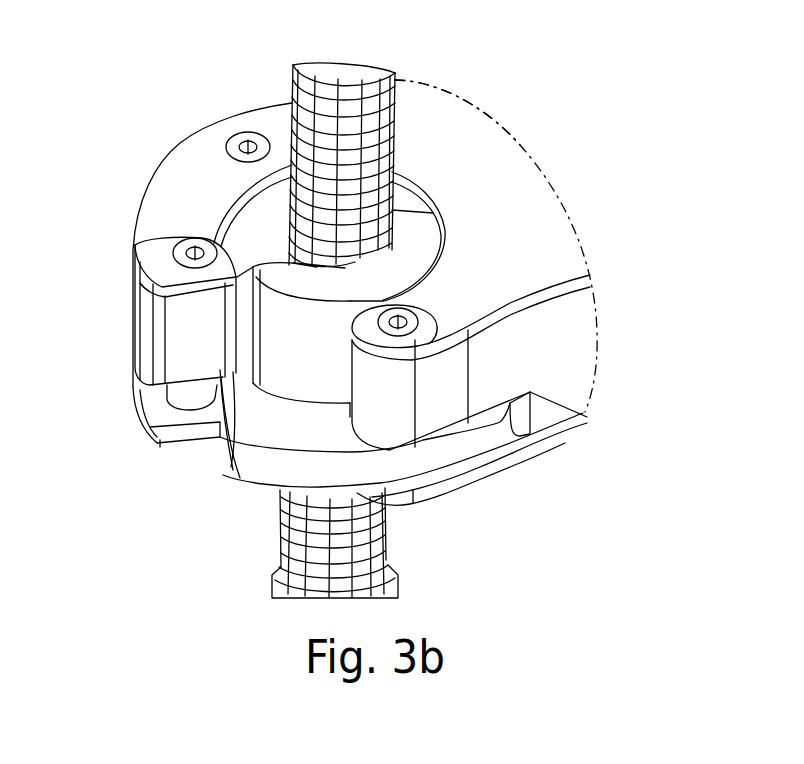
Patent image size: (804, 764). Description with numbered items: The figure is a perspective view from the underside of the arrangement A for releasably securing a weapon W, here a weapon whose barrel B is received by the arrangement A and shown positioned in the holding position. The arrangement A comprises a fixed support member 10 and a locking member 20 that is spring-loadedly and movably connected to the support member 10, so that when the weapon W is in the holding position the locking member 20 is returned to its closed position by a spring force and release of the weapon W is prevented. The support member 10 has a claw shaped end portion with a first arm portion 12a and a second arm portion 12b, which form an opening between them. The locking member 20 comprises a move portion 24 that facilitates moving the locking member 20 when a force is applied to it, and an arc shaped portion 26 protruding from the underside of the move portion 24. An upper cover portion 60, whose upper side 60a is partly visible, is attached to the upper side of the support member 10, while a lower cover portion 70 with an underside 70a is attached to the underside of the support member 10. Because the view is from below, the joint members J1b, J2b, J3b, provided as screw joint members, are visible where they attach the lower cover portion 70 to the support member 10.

The arrangement A is at (185, 65).
The barrel B is at (291, 79).
The weapon W is at (400, 143).
The fixed support member 10 is at (571, 327).
The first arm portion 12a is at (180, 338).
The second arm portion 12b is at (386, 401).
The locking member 20 is at (252, 485).
The move portion 24 is at (246, 464).
The arc shaped portion 26 is at (294, 282).
The upper cover portion 60 is at (504, 466).
The upper side of the upper cover portion 60a is at (160, 444).
The lower cover portion 70 is at (526, 214).
The underside of the lower cover portion 70a is at (485, 168).
The joint member J1b is at (186, 257).
The joint member J2b is at (407, 320).
The joint member J3b is at (234, 138).